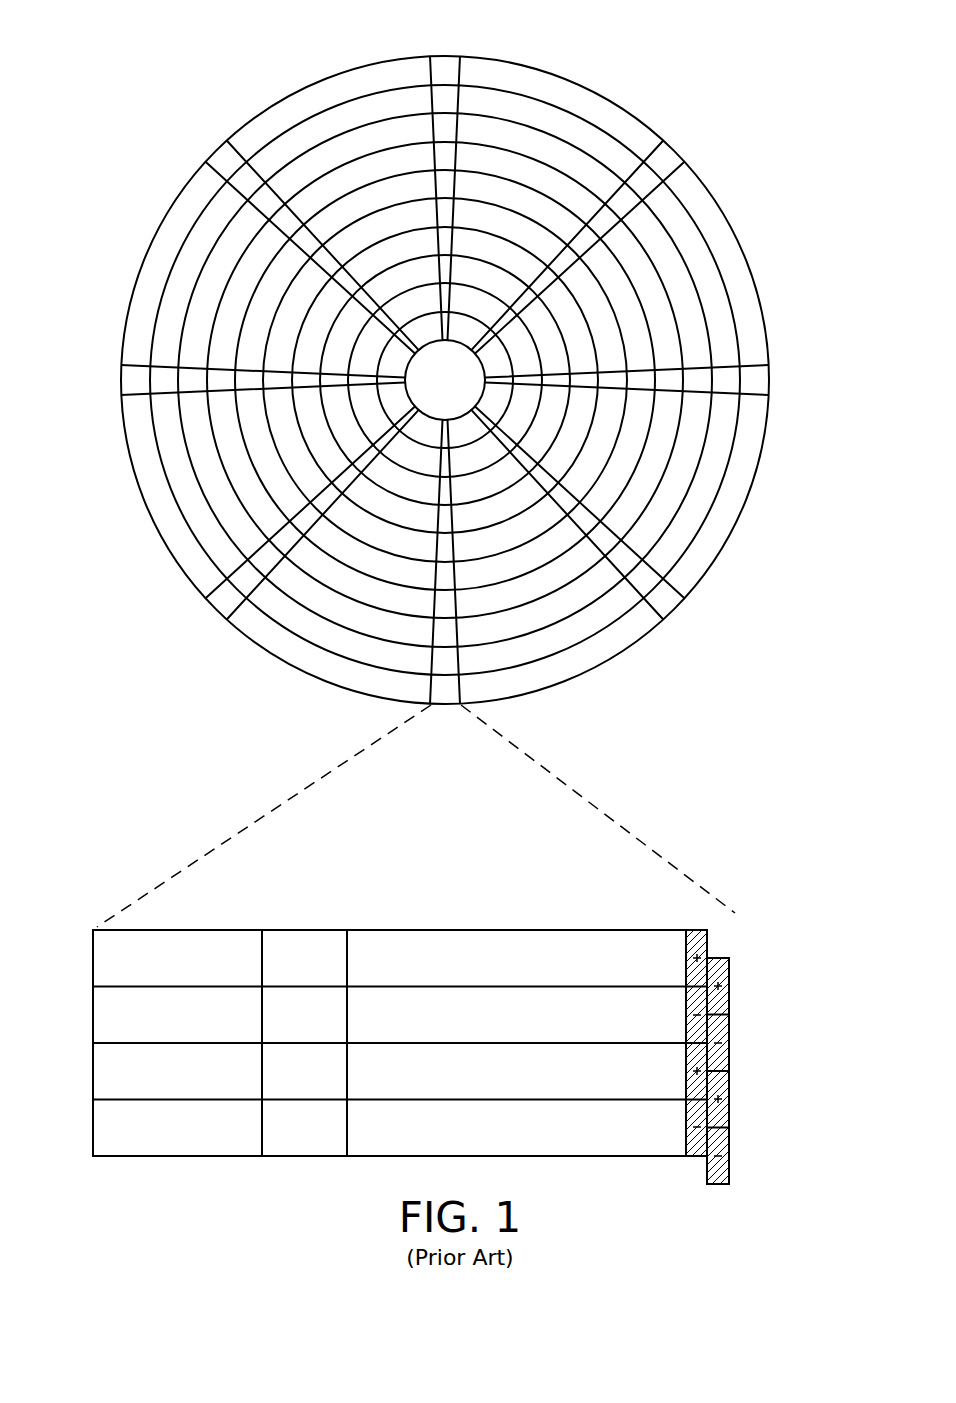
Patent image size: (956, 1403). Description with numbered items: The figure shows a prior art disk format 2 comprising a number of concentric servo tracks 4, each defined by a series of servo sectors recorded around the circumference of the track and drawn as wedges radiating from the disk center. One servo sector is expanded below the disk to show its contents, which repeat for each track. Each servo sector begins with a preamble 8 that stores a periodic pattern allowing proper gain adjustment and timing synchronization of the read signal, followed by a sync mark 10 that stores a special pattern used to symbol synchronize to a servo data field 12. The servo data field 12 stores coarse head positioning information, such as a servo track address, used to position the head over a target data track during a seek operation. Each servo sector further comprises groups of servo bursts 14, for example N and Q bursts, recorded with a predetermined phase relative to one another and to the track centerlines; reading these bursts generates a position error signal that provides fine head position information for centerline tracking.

The disk format 2 is at (445, 354).
The servo tracks 4 is at (578, 103).
The preamble 8 is at (186, 929).
The sync mark 10 is at (308, 929).
The servo data field 12 is at (505, 929).
The servo bursts 14 is at (728, 924).